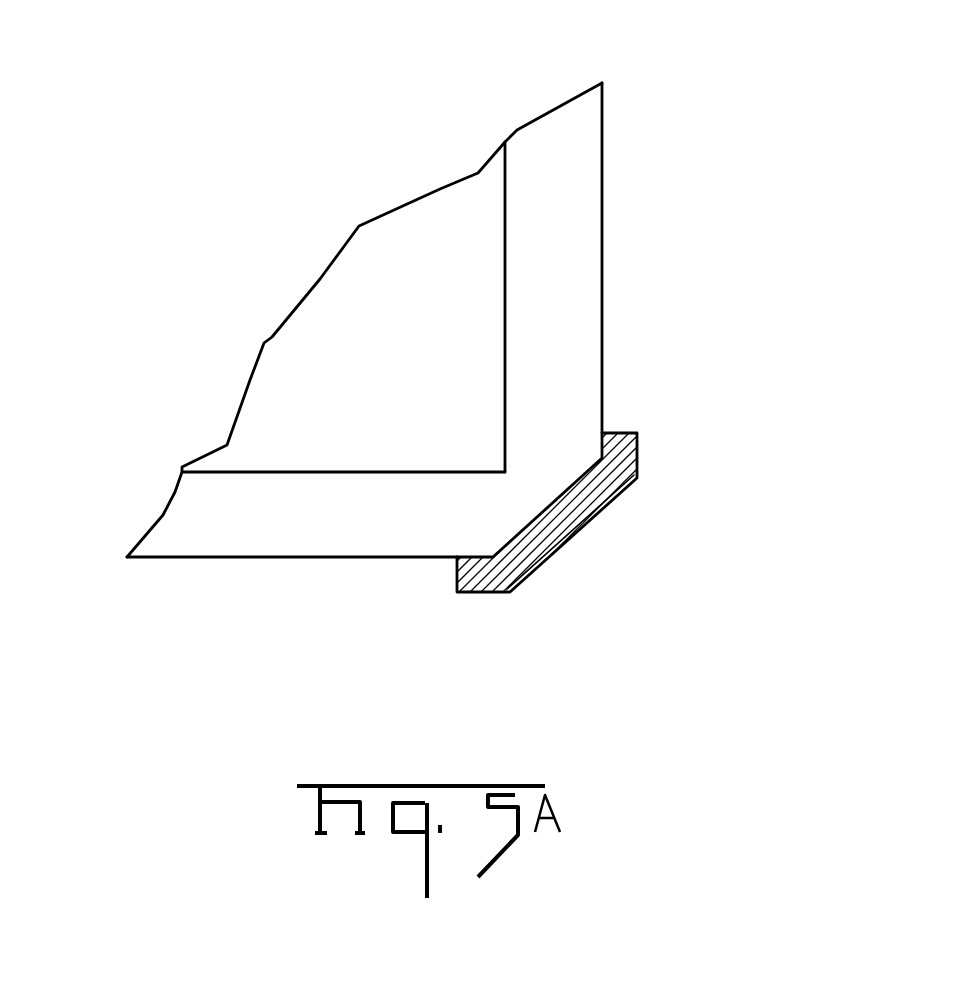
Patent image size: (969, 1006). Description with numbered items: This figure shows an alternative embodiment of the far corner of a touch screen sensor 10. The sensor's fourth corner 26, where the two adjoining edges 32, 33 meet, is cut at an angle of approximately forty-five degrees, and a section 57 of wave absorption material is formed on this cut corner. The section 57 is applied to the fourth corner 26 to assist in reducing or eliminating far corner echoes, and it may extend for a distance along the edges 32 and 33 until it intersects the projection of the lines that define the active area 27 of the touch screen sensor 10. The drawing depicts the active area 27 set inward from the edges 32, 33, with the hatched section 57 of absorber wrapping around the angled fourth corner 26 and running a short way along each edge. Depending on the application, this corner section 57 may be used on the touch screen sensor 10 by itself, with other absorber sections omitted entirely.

The touch screen sensor 10 is at (425, 392).
The active area 27 is at (357, 327).
The edge 32 is at (602, 308).
The edge 33 is at (283, 558).
The fourth corner 26 is at (606, 586).
The section of wave absorption material 57 is at (568, 525).